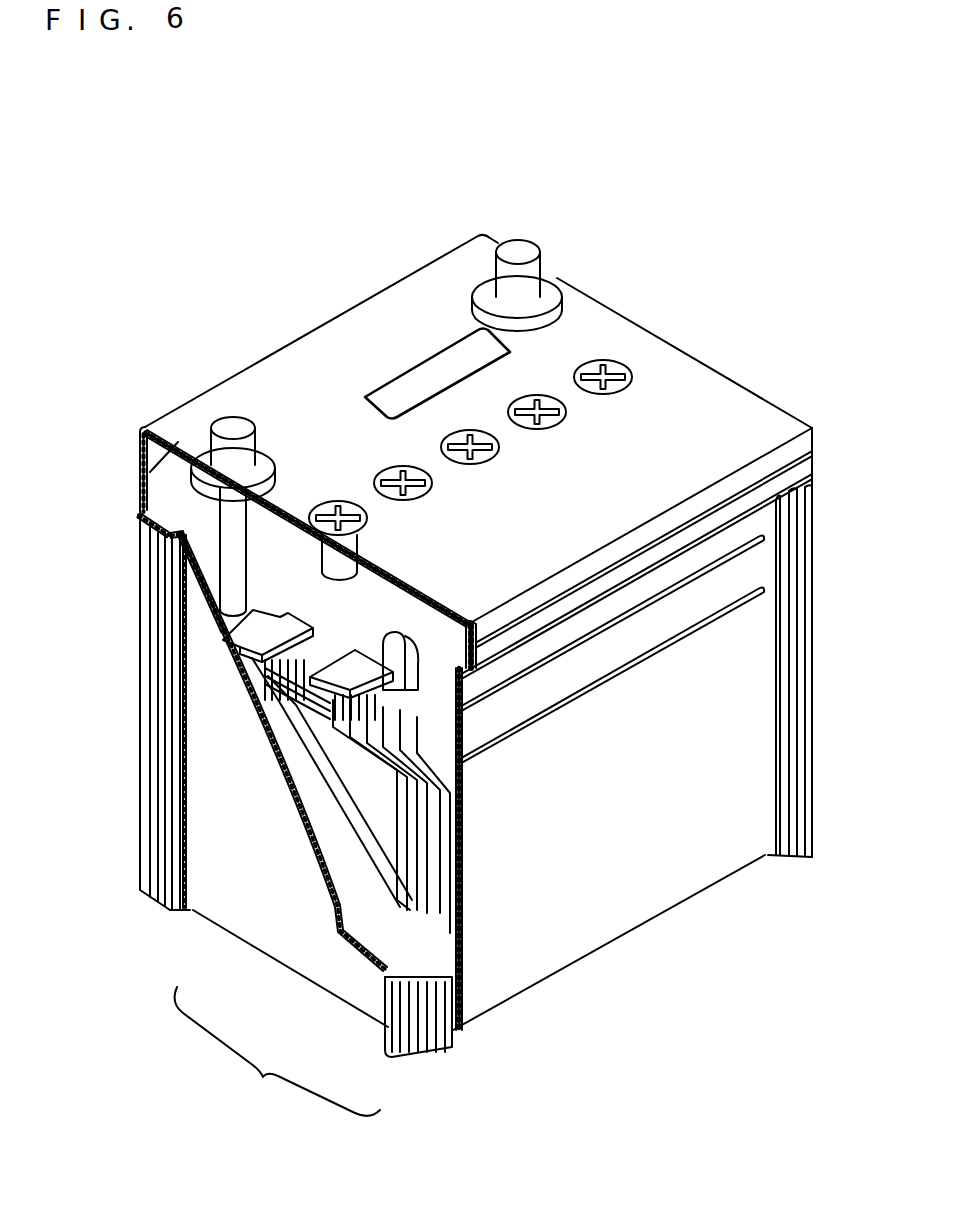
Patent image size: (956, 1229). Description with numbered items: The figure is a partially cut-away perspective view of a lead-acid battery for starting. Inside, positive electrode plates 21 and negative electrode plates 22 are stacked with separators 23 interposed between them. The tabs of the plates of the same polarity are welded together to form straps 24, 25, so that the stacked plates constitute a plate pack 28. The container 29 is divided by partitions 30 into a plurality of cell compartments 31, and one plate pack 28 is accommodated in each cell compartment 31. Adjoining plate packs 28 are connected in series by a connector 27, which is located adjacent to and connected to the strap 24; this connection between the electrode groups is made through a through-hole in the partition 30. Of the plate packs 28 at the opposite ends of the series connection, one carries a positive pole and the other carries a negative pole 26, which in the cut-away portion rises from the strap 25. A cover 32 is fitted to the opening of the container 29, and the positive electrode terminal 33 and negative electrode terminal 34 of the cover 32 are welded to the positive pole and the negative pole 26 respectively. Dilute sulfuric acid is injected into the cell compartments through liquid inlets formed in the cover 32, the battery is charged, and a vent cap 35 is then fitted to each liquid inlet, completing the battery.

The positive electrode plate 21 is at (377, 817).
The negative electrode plate 22 is at (367, 930).
The separator 23 is at (402, 933).
The strap 24 is at (330, 690).
The strap 25 is at (240, 645).
The negative pole 26 is at (232, 566).
The connector 27 is at (402, 652).
The plate pack 28 is at (277, 1053).
The container 29 is at (203, 903).
The partition 30 is at (390, 600).
The cell compartment 31 is at (172, 493).
The cover 32 is at (712, 384).
The positive electrode terminal 33 is at (518, 252).
The negative electrode terminal 34 is at (234, 428).
The vent cap 35 is at (327, 510).